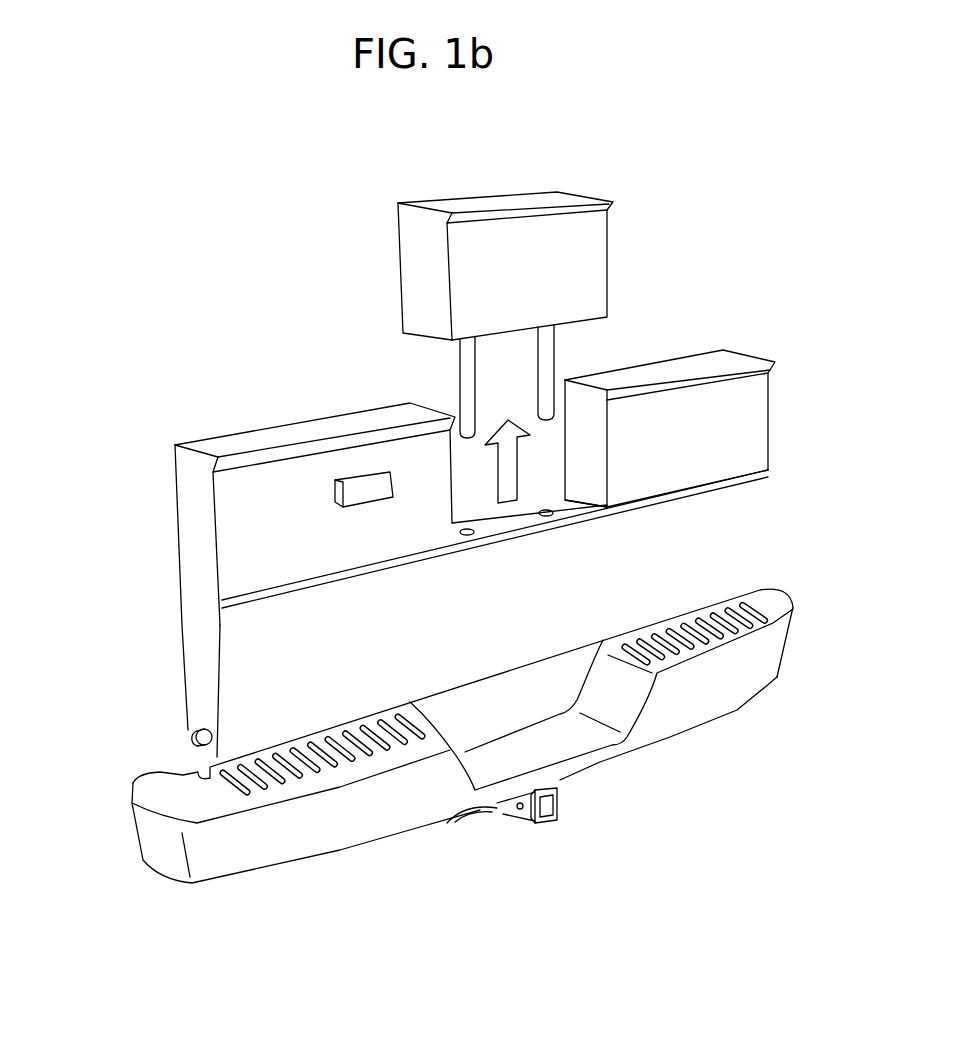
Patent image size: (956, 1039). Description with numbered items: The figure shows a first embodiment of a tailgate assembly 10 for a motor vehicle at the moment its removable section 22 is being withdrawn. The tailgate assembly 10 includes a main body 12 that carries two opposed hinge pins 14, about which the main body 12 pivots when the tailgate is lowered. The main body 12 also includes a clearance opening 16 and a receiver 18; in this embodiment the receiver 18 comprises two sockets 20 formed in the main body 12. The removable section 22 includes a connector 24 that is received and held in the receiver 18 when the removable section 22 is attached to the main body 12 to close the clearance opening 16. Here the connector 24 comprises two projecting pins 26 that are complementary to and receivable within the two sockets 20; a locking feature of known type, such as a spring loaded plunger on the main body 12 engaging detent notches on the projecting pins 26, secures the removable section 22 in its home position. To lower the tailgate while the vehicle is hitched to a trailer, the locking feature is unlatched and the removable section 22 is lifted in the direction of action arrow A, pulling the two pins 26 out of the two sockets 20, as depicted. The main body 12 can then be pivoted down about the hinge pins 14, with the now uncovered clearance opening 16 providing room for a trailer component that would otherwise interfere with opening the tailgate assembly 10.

The tailgate assembly 10 is at (728, 193).
The main body 12 is at (263, 650).
The hinge pins 14 is at (188, 741).
The clearance opening 16 is at (593, 453).
The receiver 18 is at (573, 500).
The sockets 20 is at (470, 536).
The removable section 22 is at (570, 265).
The connector 24 is at (443, 494).
The projecting pins 26 is at (548, 362).
The action arrow A is at (508, 467).